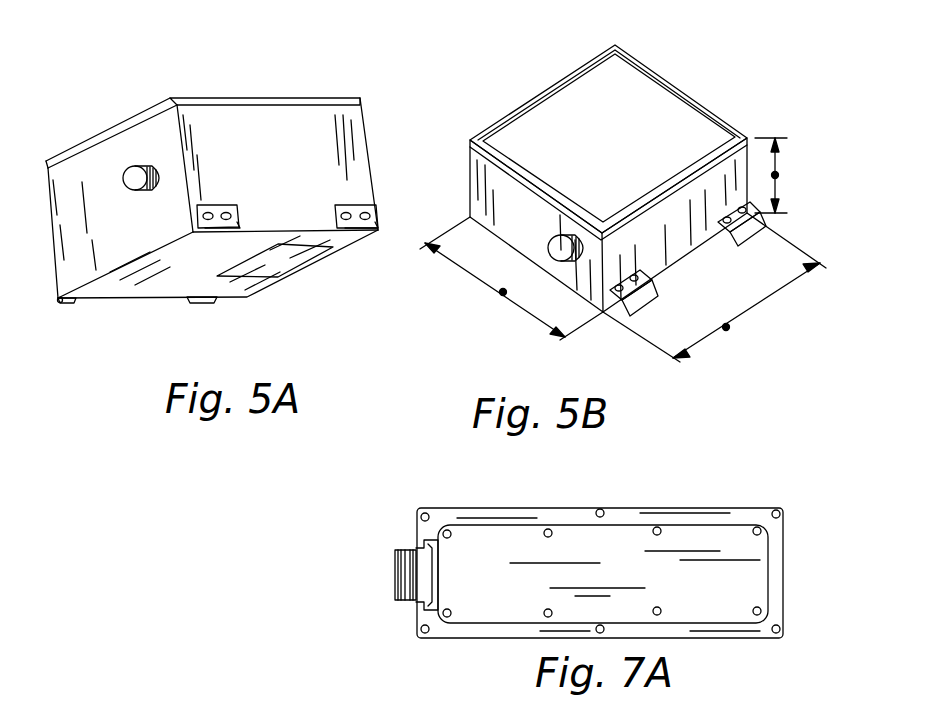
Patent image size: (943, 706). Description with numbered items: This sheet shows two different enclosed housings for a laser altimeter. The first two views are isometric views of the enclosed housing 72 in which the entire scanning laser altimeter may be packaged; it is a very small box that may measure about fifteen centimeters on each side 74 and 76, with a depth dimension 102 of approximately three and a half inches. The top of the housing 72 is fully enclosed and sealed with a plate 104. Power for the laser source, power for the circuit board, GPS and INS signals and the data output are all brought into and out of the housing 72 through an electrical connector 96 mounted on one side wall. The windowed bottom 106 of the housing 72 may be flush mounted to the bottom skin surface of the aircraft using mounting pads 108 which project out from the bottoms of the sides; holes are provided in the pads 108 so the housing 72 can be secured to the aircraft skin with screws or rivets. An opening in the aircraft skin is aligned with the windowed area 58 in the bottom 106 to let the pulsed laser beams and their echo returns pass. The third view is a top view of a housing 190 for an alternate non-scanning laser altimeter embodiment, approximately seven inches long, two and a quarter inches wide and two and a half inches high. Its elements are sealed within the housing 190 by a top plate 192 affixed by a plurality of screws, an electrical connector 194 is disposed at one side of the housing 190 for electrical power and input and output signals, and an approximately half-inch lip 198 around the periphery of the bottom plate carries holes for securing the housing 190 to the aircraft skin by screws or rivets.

In FIG. 5A, the housing 72 is at (358, 143).
In FIG. 5B, the housing 72 is at (468, 185).
In FIG. 5A, the electrical connector 96 is at (122, 177).
In FIG. 5A, the mounting pads 108 is at (355, 220).
In FIG. 5B, the mounting pads 108 is at (745, 238).
In FIG. 5A, the windowed area 58 is at (290, 258).
In FIG. 5A, the windowed bottom 106 is at (167, 290).
In FIG. 5B, the plate 104 is at (680, 115).
In FIG. 5B, the depth dimension 102 is at (777, 170).
In FIG. 5B, the side 76 is at (503, 293).
In FIG. 5B, the side 74 is at (728, 328).
In FIG. 7A, the lip 198 is at (420, 532).
In FIG. 7A, the electrical connector 194 is at (394, 576).
In FIG. 7A, the housing 190 is at (495, 624).
In FIG. 7A, the top plate 192 is at (700, 597).